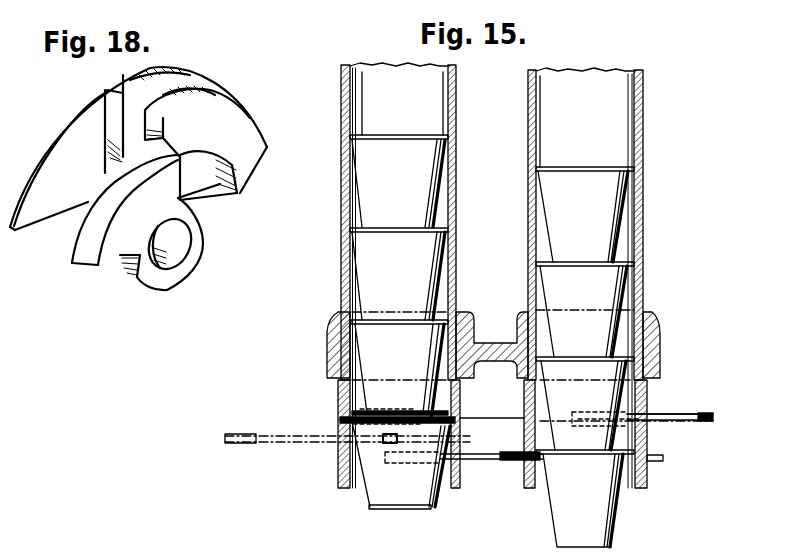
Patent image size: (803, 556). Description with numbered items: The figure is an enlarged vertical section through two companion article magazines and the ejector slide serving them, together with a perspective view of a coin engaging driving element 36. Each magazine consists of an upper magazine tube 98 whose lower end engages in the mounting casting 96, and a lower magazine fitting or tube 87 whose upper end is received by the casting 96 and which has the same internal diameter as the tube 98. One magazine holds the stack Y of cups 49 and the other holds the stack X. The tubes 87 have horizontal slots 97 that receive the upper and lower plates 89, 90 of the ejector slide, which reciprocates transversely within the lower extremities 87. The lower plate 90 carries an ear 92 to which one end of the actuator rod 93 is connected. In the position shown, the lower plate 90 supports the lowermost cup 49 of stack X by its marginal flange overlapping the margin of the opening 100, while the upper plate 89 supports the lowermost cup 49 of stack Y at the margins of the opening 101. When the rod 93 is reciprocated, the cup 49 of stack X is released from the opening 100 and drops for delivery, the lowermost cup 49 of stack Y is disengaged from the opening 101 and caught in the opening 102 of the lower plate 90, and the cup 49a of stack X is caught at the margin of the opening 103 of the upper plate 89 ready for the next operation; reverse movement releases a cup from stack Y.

In FIG. 18, the coin engaging driving element 36 is at (138, 178).
In FIG. 15, the stack Y is at (387, 192).
In FIG. 15, the stack X is at (610, 218).
In FIG. 15, the magazine tube 98 is at (342, 283).
In FIG. 15, the mounting casting 96 is at (328, 340).
In FIG. 15, the magazine fitting or tube 87 is at (648, 386).
In FIG. 15, the cup 49 is at (390, 523).
In FIG. 15, the cup 49a is at (596, 405).
In FIG. 15, the opening 101 is at (342, 409).
In FIG. 15, the horizontal slot 97 is at (340, 418).
In FIG. 15, the actuator rod 93 is at (256, 435).
In FIG. 15, the ear 92 is at (398, 442).
In FIG. 15, the opening 102 is at (498, 459).
In FIG. 15, the lower plate 90 is at (525, 455).
In FIG. 15, the opening 103 is at (681, 413).
In FIG. 15, the upper plate 89 is at (713, 413).
In FIG. 15, the opening 100 is at (657, 461).